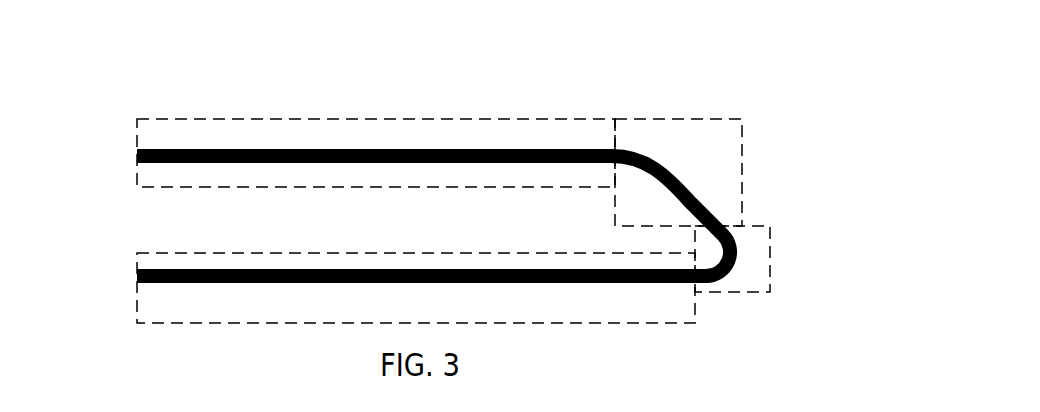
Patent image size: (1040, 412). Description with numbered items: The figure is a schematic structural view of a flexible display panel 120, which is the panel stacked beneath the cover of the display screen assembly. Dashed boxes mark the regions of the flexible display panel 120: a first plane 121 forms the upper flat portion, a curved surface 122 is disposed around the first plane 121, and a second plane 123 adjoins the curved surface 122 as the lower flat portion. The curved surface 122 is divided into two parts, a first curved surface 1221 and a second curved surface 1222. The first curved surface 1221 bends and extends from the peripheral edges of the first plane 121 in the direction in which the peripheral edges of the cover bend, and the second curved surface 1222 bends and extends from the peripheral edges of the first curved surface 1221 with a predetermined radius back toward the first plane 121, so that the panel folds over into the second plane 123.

The flexible display panel 120 is at (384, 146).
The first plane 121 is at (395, 118).
The curved surface 122 is at (787, 205).
The first curved surface 1221 is at (742, 202).
The second curved surface 1222 is at (771, 256).
The second plane 123 is at (135, 302).